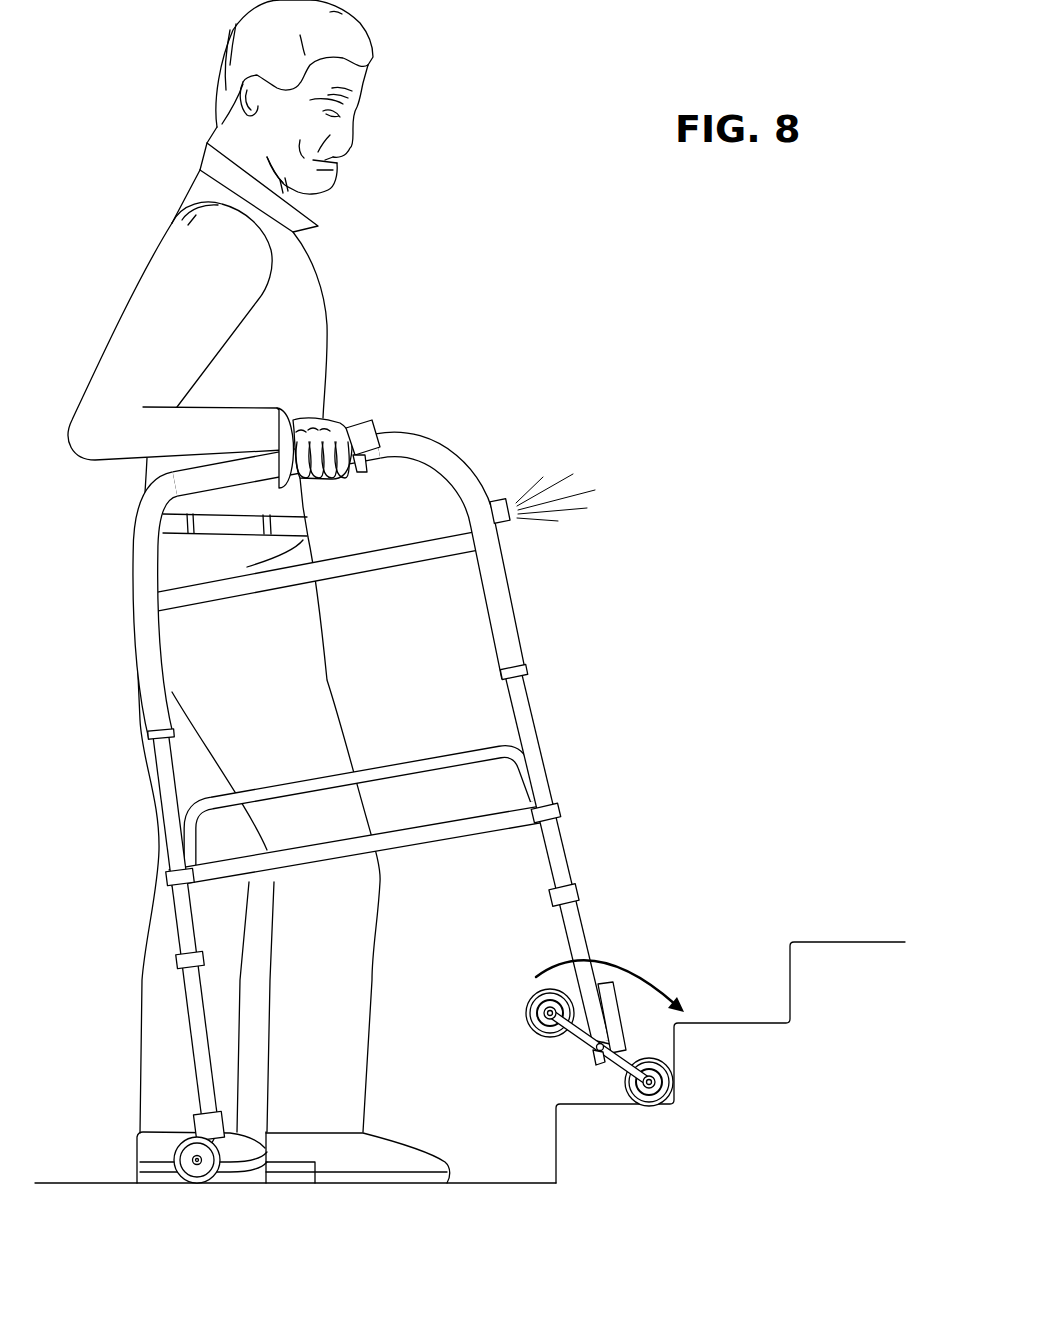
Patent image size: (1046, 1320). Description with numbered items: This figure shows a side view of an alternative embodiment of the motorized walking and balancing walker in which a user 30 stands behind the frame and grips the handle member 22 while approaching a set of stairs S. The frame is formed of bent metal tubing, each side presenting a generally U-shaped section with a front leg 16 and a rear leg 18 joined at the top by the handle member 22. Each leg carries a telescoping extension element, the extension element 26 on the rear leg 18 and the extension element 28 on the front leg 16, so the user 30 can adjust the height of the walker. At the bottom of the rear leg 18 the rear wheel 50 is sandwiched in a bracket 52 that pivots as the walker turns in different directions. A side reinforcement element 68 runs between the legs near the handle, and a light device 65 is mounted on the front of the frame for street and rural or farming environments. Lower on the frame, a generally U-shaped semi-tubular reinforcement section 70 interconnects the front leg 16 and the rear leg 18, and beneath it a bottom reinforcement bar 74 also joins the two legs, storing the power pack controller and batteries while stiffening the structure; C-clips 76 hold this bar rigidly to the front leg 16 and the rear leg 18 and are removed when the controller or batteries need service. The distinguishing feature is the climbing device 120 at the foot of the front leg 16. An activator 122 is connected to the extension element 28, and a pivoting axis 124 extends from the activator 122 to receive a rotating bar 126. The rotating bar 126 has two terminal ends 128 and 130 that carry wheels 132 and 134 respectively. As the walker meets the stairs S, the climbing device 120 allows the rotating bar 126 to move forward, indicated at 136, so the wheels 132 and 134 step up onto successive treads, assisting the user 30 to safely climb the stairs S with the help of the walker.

The front leg 16 is at (549, 725).
The rear leg 18 is at (156, 787).
The handle member 22 is at (302, 480).
The extension element 26 is at (199, 1048).
The extension element 28 is at (572, 917).
The user 30 is at (310, 338).
The rear wheel 50 is at (197, 1172).
The bracket 52 is at (203, 1125).
The light device 65 is at (497, 500).
The side reinforcement element 68 is at (377, 562).
The semi-tubular reinforcement section 70 is at (458, 757).
The bottom reinforcement bar 74 is at (491, 803).
The C-clip 76 is at (170, 880).
The climbing device 120 is at (601, 1058).
The activator 122 is at (614, 1002).
The pivoting axis 124 is at (600, 1052).
The rotating bar 126 is at (573, 1033).
The terminal end 128 is at (546, 1015).
The terminal end 130 is at (648, 1090).
The wheel 132 is at (540, 1003).
The wheel 134 is at (668, 1088).
The forward movement 136 is at (616, 963).
The stairs S is at (811, 941).